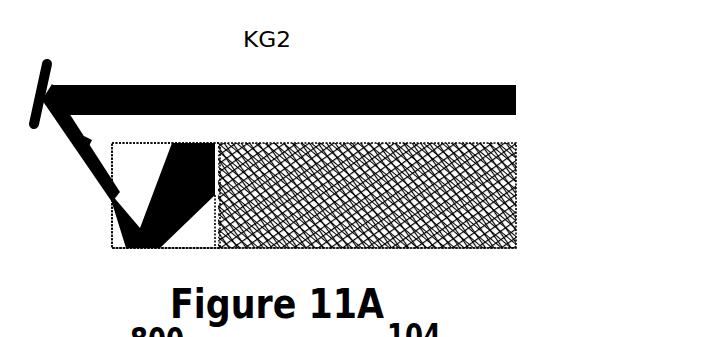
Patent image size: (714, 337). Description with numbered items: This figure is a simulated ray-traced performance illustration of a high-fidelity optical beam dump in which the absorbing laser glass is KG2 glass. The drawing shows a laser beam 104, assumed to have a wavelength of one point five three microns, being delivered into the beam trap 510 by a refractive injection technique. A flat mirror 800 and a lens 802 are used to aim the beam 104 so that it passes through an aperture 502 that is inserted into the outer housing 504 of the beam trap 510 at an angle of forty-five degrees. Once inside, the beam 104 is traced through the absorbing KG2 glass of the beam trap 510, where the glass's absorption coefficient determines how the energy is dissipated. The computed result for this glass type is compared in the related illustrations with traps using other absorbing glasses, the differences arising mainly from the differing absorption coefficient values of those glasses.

The laser beam 104 is at (411, 85).
The flat mirror 800 is at (56, 79).
The lens 802 is at (80, 168).
The beam trap 510 is at (545, 200).
The aperture 502 is at (112, 203).
The outer housing 504 is at (512, 250).